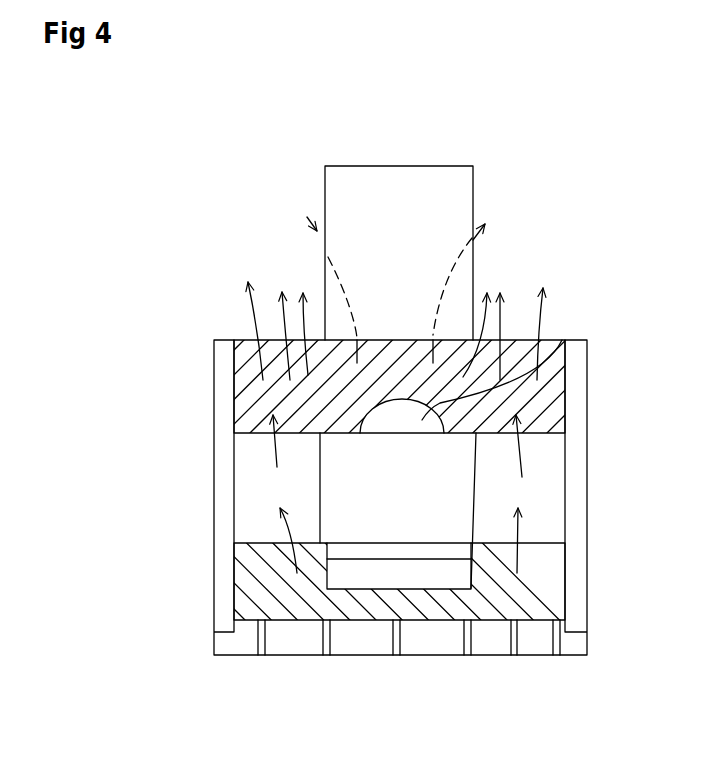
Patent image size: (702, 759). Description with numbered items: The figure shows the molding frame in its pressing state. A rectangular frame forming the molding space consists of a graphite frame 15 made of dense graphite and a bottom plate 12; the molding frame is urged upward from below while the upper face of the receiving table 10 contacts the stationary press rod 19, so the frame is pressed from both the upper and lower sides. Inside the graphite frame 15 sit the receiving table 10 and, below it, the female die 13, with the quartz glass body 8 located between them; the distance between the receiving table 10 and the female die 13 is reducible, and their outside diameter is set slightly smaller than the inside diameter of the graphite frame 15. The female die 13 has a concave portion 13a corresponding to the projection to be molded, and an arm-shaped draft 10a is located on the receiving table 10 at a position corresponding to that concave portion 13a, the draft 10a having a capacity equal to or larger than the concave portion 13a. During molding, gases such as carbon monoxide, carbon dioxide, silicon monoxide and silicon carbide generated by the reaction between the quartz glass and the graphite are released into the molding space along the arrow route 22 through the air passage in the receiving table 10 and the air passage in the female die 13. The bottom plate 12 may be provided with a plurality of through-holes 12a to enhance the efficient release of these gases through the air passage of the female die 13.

The quartz glass body 8 is at (458, 487).
The receiving table 10 is at (540, 400).
The draft 10a is at (562, 340).
The bottom plate 12 is at (287, 636).
The slot 12a is at (326, 639).
The female die 13 is at (500, 603).
The concave portion 13a is at (386, 552).
The graphite frame 15 is at (222, 392).
The stationary press rod 19 is at (335, 193).
The gas flow 22 is at (325, 262).